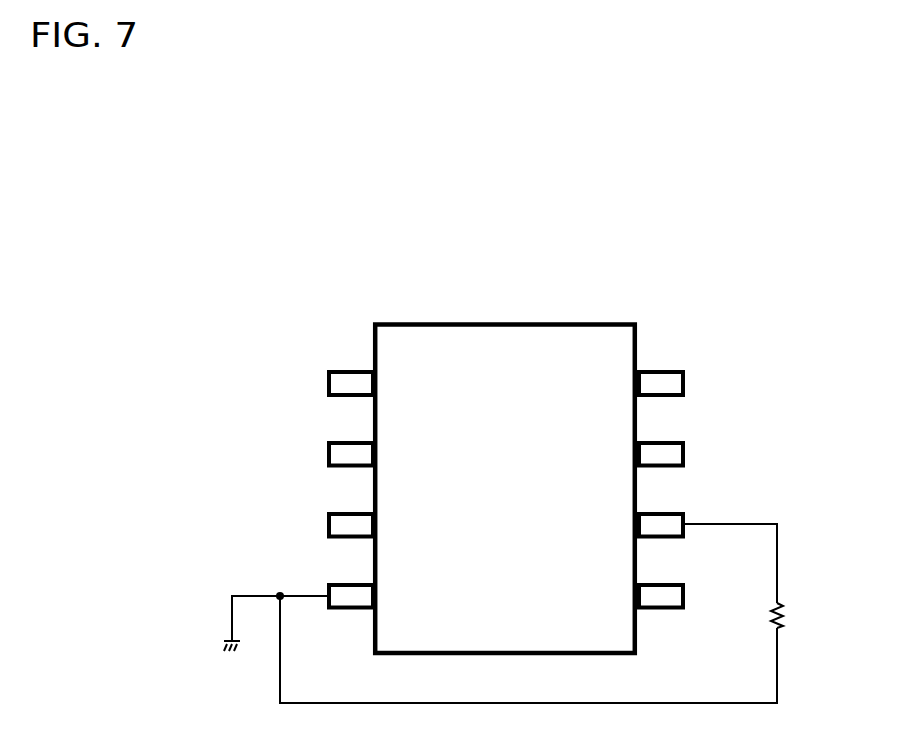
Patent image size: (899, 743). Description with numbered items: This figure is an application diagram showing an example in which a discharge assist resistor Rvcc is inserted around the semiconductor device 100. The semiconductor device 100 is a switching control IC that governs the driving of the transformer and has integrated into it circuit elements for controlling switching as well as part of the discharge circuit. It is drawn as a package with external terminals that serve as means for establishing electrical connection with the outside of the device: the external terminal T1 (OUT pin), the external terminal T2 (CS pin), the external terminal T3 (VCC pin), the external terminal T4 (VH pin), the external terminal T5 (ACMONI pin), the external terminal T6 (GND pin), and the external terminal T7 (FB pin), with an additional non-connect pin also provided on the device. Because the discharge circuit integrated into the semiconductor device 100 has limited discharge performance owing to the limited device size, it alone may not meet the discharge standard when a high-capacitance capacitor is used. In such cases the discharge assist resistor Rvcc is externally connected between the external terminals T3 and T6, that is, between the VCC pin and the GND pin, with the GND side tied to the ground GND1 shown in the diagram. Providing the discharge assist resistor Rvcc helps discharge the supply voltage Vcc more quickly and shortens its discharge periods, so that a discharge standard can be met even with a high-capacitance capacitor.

The semiconductor device 100 is at (508, 323).
The external terminal (OUT pin) T1 is at (661, 583).
The external terminal (CS pin) T2 is at (351, 512).
The external terminal (VCC pin) T3 is at (661, 512).
The external terminal (VH pin) T4 is at (661, 370).
The external terminal (ACMONI pin) T5 is at (351, 370).
The external terminal (GND pin) T6 is at (351, 583).
The external terminal (FB pin) T7 is at (351, 441).
The ground GND1 is at (266, 636).
The discharge assist resistor Rvcc is at (567, 613).